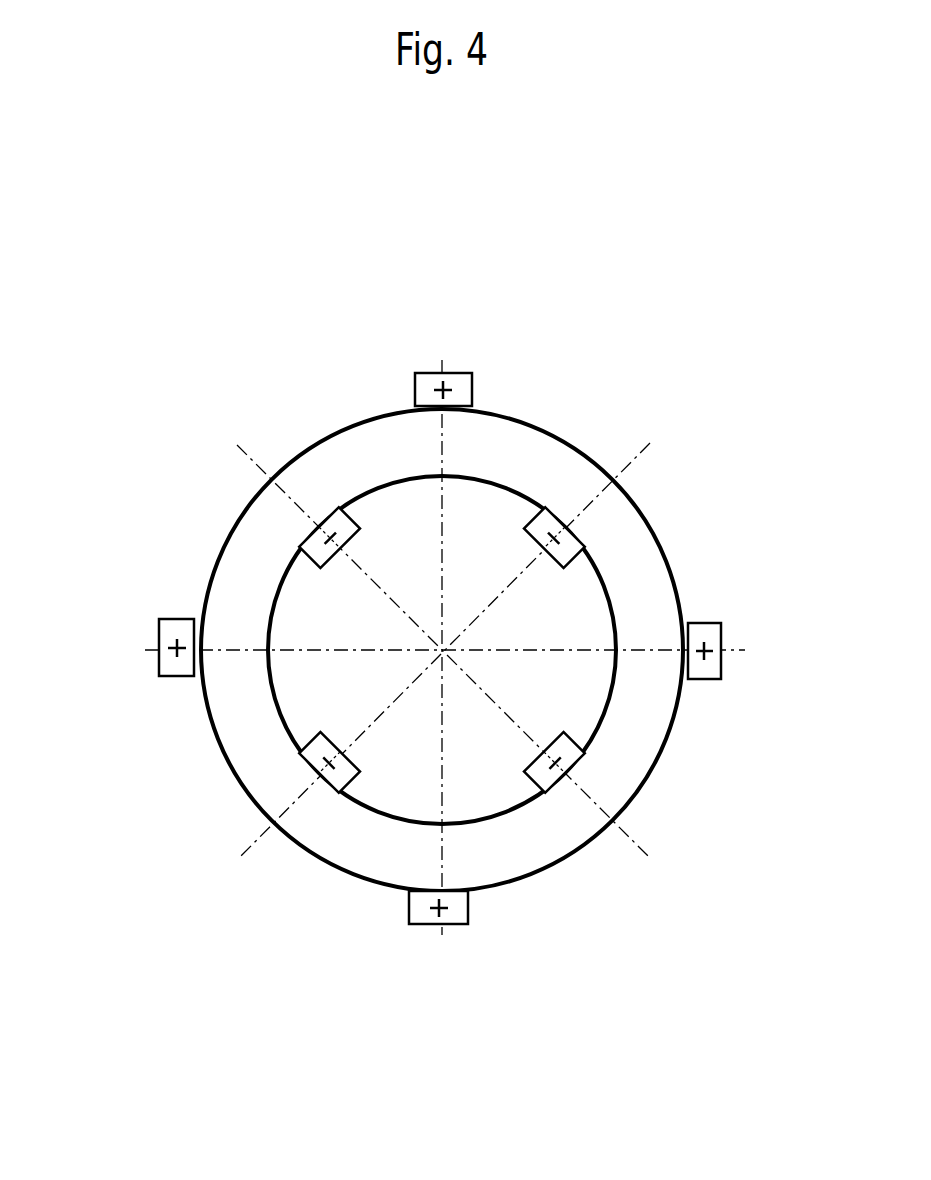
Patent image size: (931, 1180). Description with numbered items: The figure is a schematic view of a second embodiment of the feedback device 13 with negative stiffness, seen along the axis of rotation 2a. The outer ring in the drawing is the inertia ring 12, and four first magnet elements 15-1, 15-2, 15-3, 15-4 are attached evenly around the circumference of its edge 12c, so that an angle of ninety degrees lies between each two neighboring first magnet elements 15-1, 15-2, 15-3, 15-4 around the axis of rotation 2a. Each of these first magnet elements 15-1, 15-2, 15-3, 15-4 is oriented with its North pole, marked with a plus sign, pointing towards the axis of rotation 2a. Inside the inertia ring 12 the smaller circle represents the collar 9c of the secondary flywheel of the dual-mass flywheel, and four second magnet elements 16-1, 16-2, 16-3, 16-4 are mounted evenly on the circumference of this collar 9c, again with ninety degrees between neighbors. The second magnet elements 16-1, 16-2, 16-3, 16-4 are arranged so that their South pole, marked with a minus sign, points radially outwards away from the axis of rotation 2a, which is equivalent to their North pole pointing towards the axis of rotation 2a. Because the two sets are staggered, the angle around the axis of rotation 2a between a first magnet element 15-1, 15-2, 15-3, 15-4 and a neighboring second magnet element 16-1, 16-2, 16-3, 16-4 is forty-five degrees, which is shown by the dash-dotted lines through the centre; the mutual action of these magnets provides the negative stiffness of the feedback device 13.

The feedback device 13 is at (442, 585).
The inertia ring 12 is at (442, 614).
The edge of the inertia ring 12c is at (530, 432).
The collar of the secondary flywheel 9c is at (580, 597).
The axis of rotation 2a is at (442, 650).
The first magnet element 15-1 is at (472, 373).
The first magnet element 15-2 is at (721, 679).
The first magnet element 15-3 is at (468, 924).
The first magnet element 15-4 is at (158, 675).
The second magnet element 16-1 is at (548, 525).
The second magnet element 16-2 is at (562, 748).
The second magnet element 16-3 is at (337, 788).
The second magnet element 16-4 is at (329, 527).